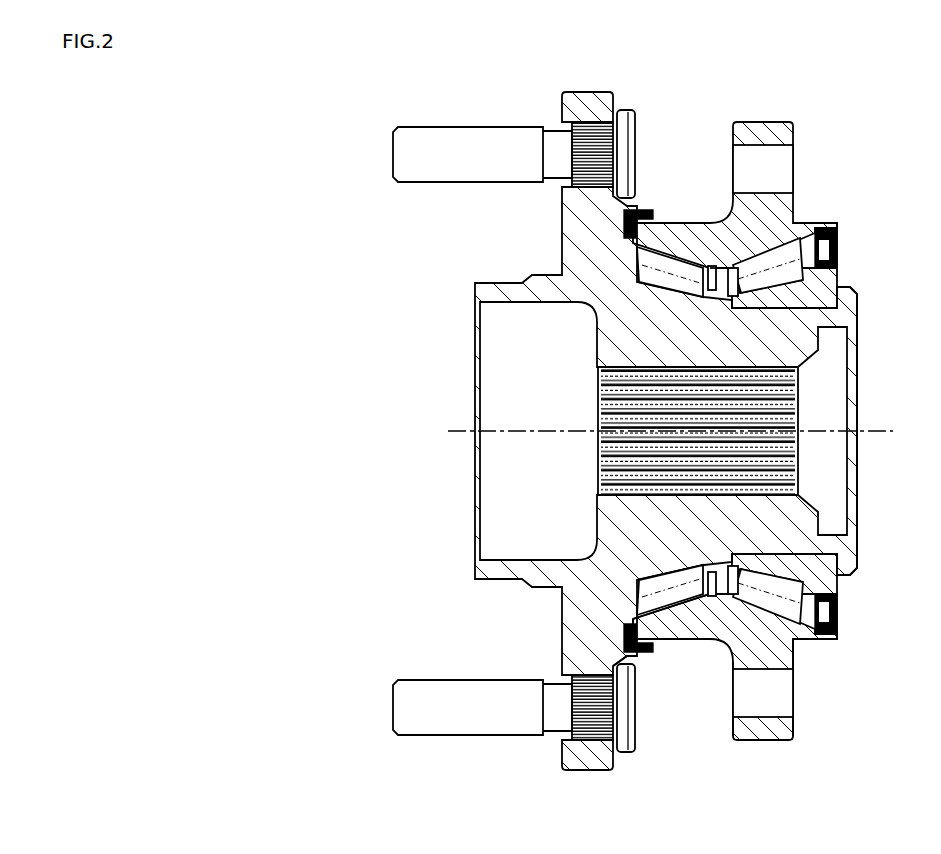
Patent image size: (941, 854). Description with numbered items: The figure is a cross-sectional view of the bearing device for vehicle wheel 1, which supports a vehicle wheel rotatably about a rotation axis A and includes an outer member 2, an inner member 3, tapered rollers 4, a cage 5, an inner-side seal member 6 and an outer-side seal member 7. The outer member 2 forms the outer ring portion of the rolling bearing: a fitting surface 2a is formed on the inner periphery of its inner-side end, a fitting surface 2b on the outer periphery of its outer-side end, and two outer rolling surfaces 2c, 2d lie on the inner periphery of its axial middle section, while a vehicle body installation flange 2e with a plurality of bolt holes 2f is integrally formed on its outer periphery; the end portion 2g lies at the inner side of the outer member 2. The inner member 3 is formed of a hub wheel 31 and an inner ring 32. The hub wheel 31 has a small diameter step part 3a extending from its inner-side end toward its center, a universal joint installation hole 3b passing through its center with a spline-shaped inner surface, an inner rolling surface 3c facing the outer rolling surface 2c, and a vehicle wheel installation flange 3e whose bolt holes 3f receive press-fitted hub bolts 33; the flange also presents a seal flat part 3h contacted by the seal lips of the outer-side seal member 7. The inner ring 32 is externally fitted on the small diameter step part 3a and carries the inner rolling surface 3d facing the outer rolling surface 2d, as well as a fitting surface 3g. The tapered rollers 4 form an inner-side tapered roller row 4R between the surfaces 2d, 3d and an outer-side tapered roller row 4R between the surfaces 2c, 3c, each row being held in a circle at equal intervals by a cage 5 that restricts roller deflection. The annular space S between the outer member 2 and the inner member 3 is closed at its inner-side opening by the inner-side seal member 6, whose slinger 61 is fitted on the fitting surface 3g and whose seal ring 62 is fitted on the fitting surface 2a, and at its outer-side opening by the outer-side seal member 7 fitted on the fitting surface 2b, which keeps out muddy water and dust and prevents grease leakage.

The bearing device for vehicle wheel 1 is at (332, 91).
The outer member 2 is at (757, 119).
The fitting surface 2a is at (820, 640).
The fitting surface 2b is at (650, 643).
The outer rolling surface 2c is at (679, 618).
The outer rolling surface 2d is at (760, 650).
The vehicle body installation flange 2e is at (757, 742).
The bolt holes 2f is at (790, 151).
The outer ring end portion 2g is at (812, 222).
The inner member 3 is at (918, 583).
The small diameter step part 3a is at (857, 318).
The universal joint installation hole 3b is at (603, 385).
The inner rolling surface 3c is at (684, 575).
The inner rolling surface 3d is at (768, 563).
The vehicle wheel installation flange 3e is at (587, 772).
The bolt holes 3f is at (549, 127).
The fitting surface 3g is at (792, 592).
The seal flat part 3h is at (622, 650).
The hub wheel 31 is at (849, 562).
The inner ring 32 is at (838, 588).
The hub bolt 33 is at (433, 126).
The tapered rollers 4 is at (669, 296).
The tapered roller row 4R is at (815, 362).
The cage 5 is at (709, 292).
The inner-side seal member 6 is at (913, 262).
The slinger 61 is at (839, 253).
The seal ring 62 is at (834, 231).
The outer-side seal member 7 is at (645, 211).
The annular space S is at (722, 264).
The rotation axis A is at (680, 432).